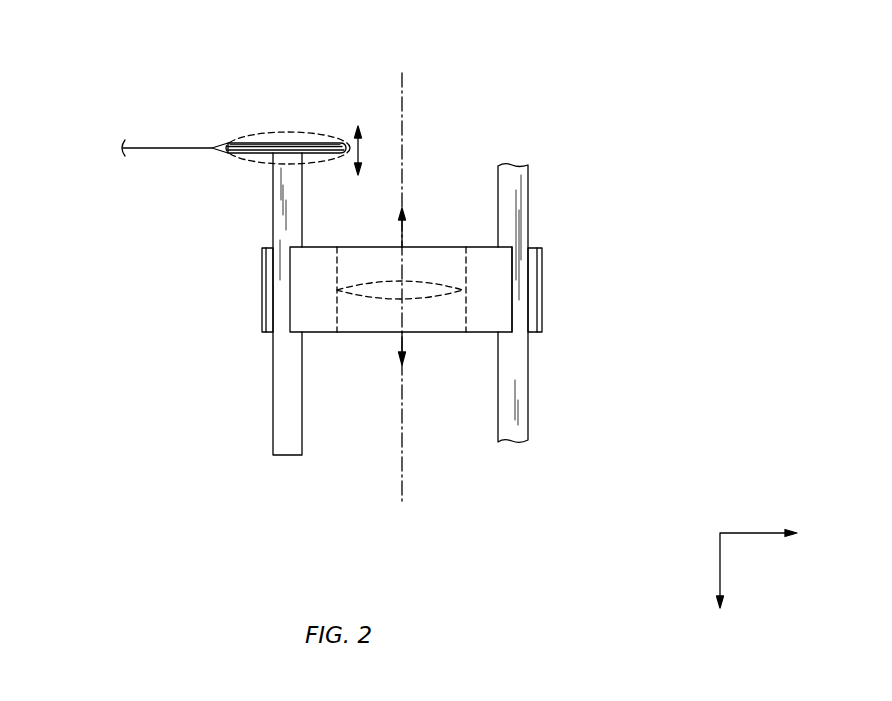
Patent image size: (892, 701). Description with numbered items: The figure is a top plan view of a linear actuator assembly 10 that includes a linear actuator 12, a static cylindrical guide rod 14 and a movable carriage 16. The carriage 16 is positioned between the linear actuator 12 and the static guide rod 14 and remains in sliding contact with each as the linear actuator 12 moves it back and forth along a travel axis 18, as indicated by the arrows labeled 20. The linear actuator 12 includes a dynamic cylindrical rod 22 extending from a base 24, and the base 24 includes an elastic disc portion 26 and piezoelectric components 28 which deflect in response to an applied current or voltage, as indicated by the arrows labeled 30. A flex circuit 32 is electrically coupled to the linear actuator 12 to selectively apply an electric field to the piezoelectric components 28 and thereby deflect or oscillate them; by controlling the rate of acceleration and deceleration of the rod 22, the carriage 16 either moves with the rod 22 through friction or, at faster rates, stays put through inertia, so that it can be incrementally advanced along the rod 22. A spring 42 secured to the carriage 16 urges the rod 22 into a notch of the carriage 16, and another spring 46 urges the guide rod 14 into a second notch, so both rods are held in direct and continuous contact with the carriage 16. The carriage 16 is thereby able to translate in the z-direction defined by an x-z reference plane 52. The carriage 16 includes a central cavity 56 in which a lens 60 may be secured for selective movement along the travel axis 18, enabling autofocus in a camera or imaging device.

The linear actuator assembly 10 is at (623, 82).
The linear actuator 12 is at (229, 202).
The static cylindrical guide rod 14 is at (513, 382).
The carriage 16 is at (318, 307).
The travel axis 18 is at (402, 483).
The arrows 20 is at (398, 233).
The dynamic cylindrical rod 22 is at (283, 362).
The base 24 is at (265, 110).
The elastic disc portion 26 is at (338, 143).
The piezoelectric components 28 is at (317, 143).
The arrows 30 is at (362, 148).
The flex circuit 32 is at (172, 147).
The spring 42 is at (262, 290).
The spring 46 is at (542, 288).
The x-z reference plane 52 is at (720, 570).
The central cavity 56 is at (447, 231).
The lens 60 is at (363, 297).